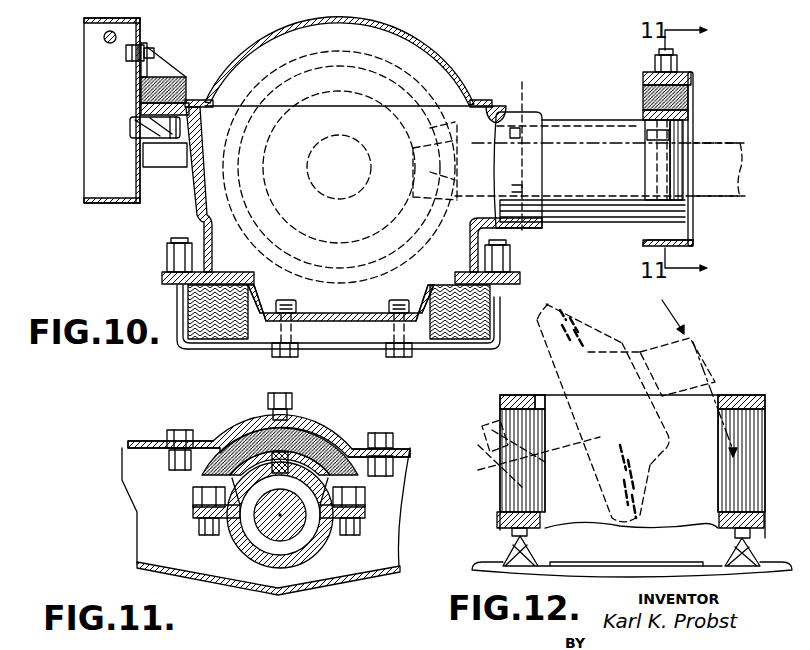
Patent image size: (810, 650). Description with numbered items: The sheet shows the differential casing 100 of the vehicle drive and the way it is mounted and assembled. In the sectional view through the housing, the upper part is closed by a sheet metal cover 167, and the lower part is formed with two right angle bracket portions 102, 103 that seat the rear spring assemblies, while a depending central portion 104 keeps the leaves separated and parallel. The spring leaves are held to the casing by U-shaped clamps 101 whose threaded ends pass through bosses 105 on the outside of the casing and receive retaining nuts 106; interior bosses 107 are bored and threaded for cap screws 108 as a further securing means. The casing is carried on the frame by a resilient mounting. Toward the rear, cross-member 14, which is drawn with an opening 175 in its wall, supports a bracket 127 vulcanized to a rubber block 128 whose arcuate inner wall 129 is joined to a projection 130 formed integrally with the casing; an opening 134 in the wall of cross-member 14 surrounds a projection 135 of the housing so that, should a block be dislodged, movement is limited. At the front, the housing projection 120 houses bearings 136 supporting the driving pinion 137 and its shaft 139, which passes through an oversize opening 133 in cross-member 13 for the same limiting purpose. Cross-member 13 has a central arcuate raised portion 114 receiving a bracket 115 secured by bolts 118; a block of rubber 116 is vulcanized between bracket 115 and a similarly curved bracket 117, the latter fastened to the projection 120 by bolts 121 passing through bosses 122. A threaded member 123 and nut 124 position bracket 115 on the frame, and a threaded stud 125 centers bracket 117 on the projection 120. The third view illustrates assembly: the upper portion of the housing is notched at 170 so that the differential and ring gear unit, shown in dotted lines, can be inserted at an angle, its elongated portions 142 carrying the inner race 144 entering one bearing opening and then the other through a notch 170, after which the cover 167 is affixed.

In FIG. 10, the cross-member 14 is at (97, 197).
In FIG. 10, the hole 175 is at (103, 38).
In FIG. 10, the bracket 127 is at (158, 70).
In FIG. 10, the rubber block 128 is at (186, 82).
In FIG. 10, the opening 134 is at (141, 108).
In FIG. 10, the projection 135 is at (130, 126).
In FIG. 10, the inner wall 129 is at (149, 112).
In FIG. 10, the projection 130 is at (168, 110).
In FIG. 10, the cover 167 is at (443, 60).
In FIG. 10, the driving pinion 137 is at (486, 104).
In FIG. 10, the bearings 136 is at (522, 82).
In FIG. 10, the projection 120 is at (577, 160).
In FIG. 11, the projection 120 is at (257, 557).
In FIG. 10, the nut 124 is at (656, 60).
In FIG. 11, the nut 124 is at (275, 409).
In FIG. 10, the bracket 115 is at (691, 72).
In FIG. 11, the bracket 115 is at (197, 440).
In FIG. 10, the block of rubber 116 is at (692, 97).
In FIG. 11, the block of rubber 116 is at (250, 445).
In FIG. 10, the bracket 117 is at (645, 114).
In FIG. 11, the bracket 117 is at (192, 490).
In FIG. 10, the cross-member 13 is at (696, 127).
In FIG. 11, the cross-member 13 is at (123, 488).
In FIG. 10, the threaded stud 125 is at (655, 123).
In FIG. 11, the threaded stud 125 is at (307, 530).
In FIG. 10, the shaft 139 is at (694, 200).
In FIG. 10, the opening 133 is at (694, 230).
In FIG. 10, the differential casing 100 is at (197, 222).
In FIG. 12, the differential casing 100 is at (742, 552).
In FIG. 10, the retaining nuts 106 is at (178, 257).
In FIG. 10, the bosses 105 is at (167, 278).
In FIG. 10, the bracket portion 102 is at (259, 294).
In FIG. 10, the bracket portion 103 is at (428, 292).
In FIG. 10, the bosses 107 is at (373, 310).
In FIG. 10, the cap screws 108 is at (292, 372).
In FIG. 10, the depending central portion 104 is at (310, 325).
In FIG. 10, the U-shaped clamps 101 is at (457, 348).
In FIG. 11, the bolts 118 is at (163, 443).
In FIG. 11, the threaded member 123 is at (287, 420).
In FIG. 11, the central arcuate raised portion 114 is at (327, 426).
In FIG. 11, the bosses 122 is at (193, 507).
In FIG. 11, the bolts 121 is at (199, 525).
In FIG. 12, the notches 170 is at (546, 396).
In FIG. 12, the elongated portions 142 is at (700, 340).
In FIG. 12, the inner race 144 is at (668, 334).